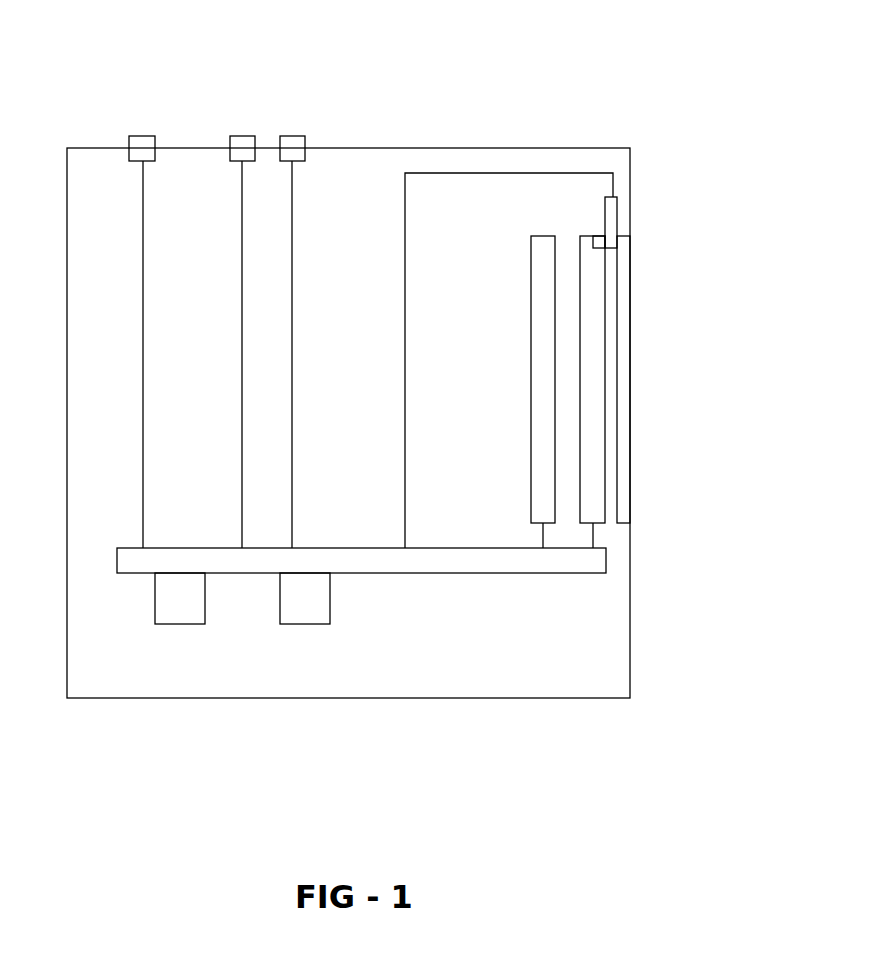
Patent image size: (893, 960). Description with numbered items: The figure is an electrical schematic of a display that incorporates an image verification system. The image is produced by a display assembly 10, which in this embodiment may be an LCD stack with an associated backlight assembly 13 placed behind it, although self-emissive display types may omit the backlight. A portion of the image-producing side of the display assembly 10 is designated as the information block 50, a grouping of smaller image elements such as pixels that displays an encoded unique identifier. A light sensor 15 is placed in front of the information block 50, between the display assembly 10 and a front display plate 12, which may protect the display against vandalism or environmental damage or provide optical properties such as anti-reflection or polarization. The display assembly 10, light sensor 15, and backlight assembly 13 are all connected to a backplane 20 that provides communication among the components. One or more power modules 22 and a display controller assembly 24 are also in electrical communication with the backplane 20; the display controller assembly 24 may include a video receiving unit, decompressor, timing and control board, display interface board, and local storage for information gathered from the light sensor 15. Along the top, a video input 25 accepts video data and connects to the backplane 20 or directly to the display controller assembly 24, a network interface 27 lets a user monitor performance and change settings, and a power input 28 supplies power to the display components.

The display assembly 10 is at (582, 232).
The front display plate 12 is at (632, 463).
The backlight assembly 13 is at (528, 232).
The light sensor 15 is at (620, 196).
The backplane 20 is at (480, 575).
The power module 22 is at (305, 626).
The display controller assembly 24 is at (167, 626).
The video input 25 is at (142, 135).
The network interface 27 is at (243, 135).
The power input 28 is at (307, 135).
The information block 50 is at (598, 248).